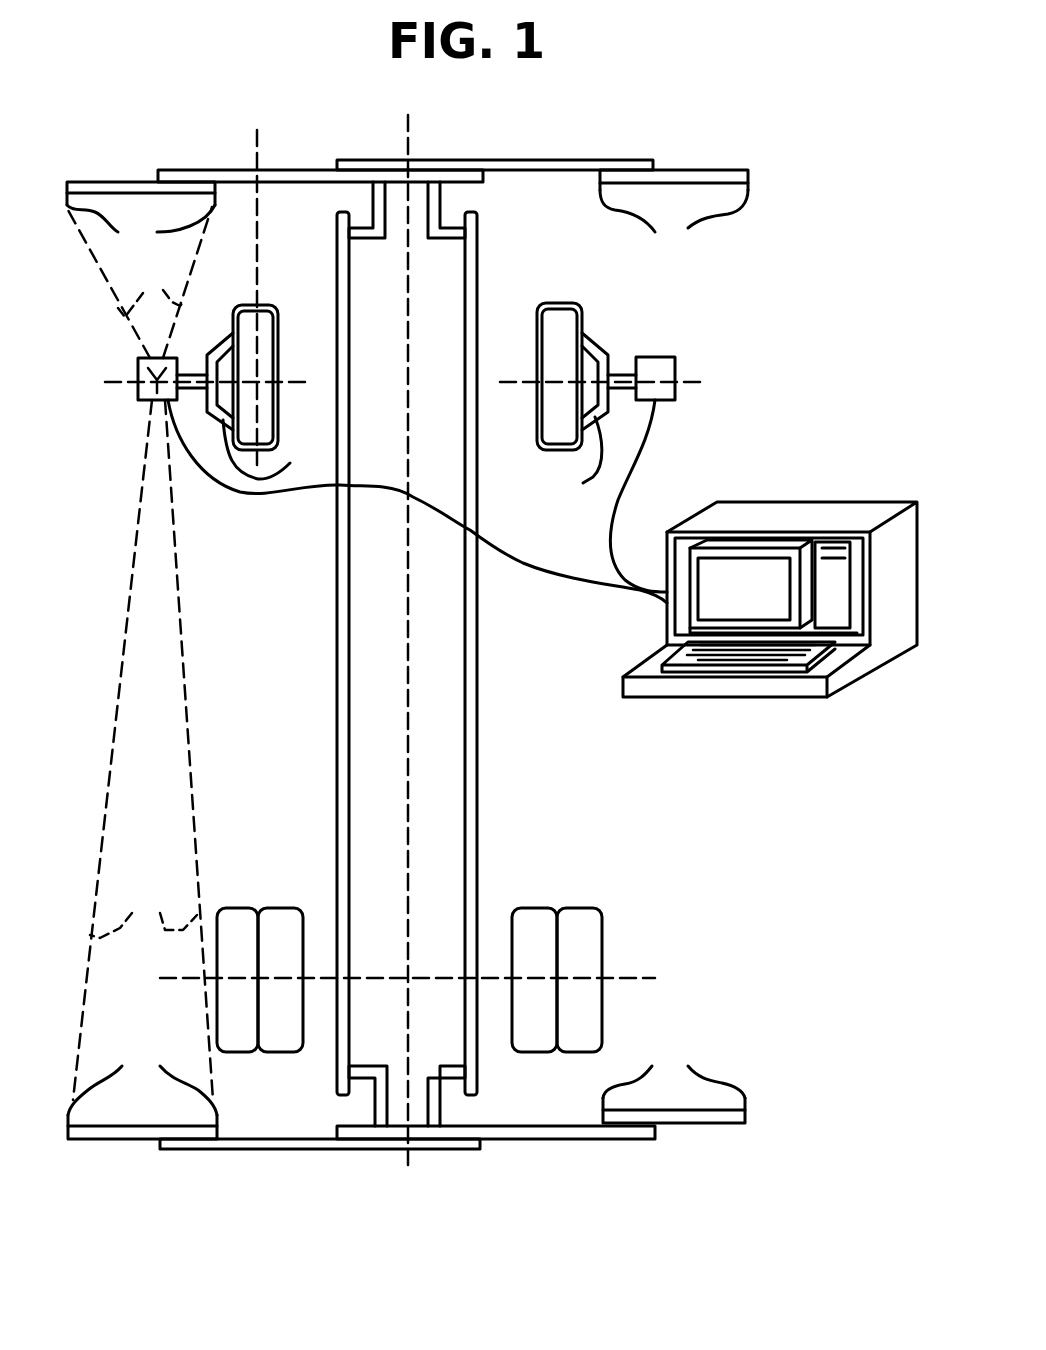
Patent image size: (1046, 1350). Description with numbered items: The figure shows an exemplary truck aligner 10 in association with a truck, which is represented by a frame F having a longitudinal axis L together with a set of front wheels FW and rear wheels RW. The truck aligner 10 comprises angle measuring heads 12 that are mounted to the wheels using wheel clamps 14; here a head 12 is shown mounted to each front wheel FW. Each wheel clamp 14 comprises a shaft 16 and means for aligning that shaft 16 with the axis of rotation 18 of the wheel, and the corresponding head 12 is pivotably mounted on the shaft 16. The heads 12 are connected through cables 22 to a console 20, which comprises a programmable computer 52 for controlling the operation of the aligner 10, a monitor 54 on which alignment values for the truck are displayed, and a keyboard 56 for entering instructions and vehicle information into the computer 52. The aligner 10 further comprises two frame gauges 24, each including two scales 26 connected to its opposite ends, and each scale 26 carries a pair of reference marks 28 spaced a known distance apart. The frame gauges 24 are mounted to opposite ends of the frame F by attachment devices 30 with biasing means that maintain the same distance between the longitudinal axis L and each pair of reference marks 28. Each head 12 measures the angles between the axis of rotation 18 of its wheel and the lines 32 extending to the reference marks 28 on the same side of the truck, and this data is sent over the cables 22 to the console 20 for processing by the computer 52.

The truck aligner 10 is at (800, 703).
The angle measuring head 12 is at (138, 397).
The wheel clamp 14 is at (417, 501).
The shaft 16 is at (198, 372).
The axis of rotation 18 is at (308, 380).
The console 20 is at (751, 569).
The cable 22 is at (630, 485).
The frame gauge 24 is at (318, 170).
The scale 26 is at (128, 182).
The reference mark 28 is at (407, 652).
The attachment device 30 is at (372, 240).
The line 32 is at (140, 653).
The programmable computer 52 is at (835, 540).
The monitor 54 is at (720, 603).
The keyboard 56 is at (787, 660).
The frame F is at (338, 690).
The longitudinal axis L is at (408, 790).
The front wheel FW is at (270, 425).
The rear wheel RW is at (256, 908).